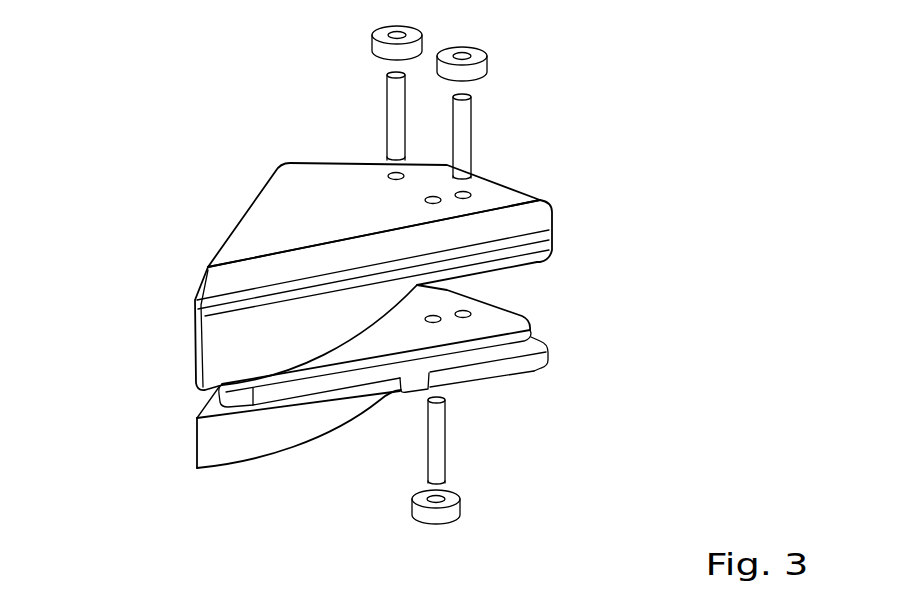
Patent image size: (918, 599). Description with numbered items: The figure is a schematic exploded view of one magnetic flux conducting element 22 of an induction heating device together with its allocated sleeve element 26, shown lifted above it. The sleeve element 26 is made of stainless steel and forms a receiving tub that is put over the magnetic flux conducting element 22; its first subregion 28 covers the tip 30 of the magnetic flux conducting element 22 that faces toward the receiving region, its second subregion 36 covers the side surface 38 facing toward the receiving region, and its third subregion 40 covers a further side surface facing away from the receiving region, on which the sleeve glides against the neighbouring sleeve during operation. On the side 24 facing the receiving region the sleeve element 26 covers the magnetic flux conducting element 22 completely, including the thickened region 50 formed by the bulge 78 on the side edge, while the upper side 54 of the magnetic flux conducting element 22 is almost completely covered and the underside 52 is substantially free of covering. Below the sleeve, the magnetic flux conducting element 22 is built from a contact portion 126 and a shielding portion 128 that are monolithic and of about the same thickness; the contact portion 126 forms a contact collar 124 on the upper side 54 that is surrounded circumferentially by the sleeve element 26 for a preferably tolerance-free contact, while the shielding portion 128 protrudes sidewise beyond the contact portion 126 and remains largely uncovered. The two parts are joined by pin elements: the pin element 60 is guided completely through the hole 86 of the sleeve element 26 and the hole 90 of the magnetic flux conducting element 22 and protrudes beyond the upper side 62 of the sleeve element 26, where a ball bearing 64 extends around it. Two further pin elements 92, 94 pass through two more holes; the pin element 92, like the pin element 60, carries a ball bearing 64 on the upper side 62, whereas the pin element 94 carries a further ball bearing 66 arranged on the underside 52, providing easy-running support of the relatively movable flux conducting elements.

The magnetic flux conducting element 22 is at (442, 252).
The side 24 is at (231, 474).
The sleeve element 26 is at (542, 218).
The first subregion 28 is at (180, 343).
The tip 30 is at (196, 417).
The second subregion 36 is at (267, 352).
The side surface 38 is at (232, 441).
The third subregion 40 is at (360, 278).
The thickened region 50 is at (299, 472).
The underside 52 is at (566, 422).
The upper side 54 is at (400, 326).
The pin element 60 is at (462, 122).
The upper side 62 is at (296, 214).
The ball bearing 64 is at (458, 72).
The further ball bearing 66 is at (446, 517).
The bulge 78 is at (266, 472).
The hole 86 is at (463, 192).
The hole 90 is at (468, 311).
The further pin element 92 is at (395, 125).
The further pin element 94 is at (434, 450).
The contact collar 124 is at (508, 353).
The contact portion 126 is at (467, 393).
The shielding portion 128 is at (531, 363).